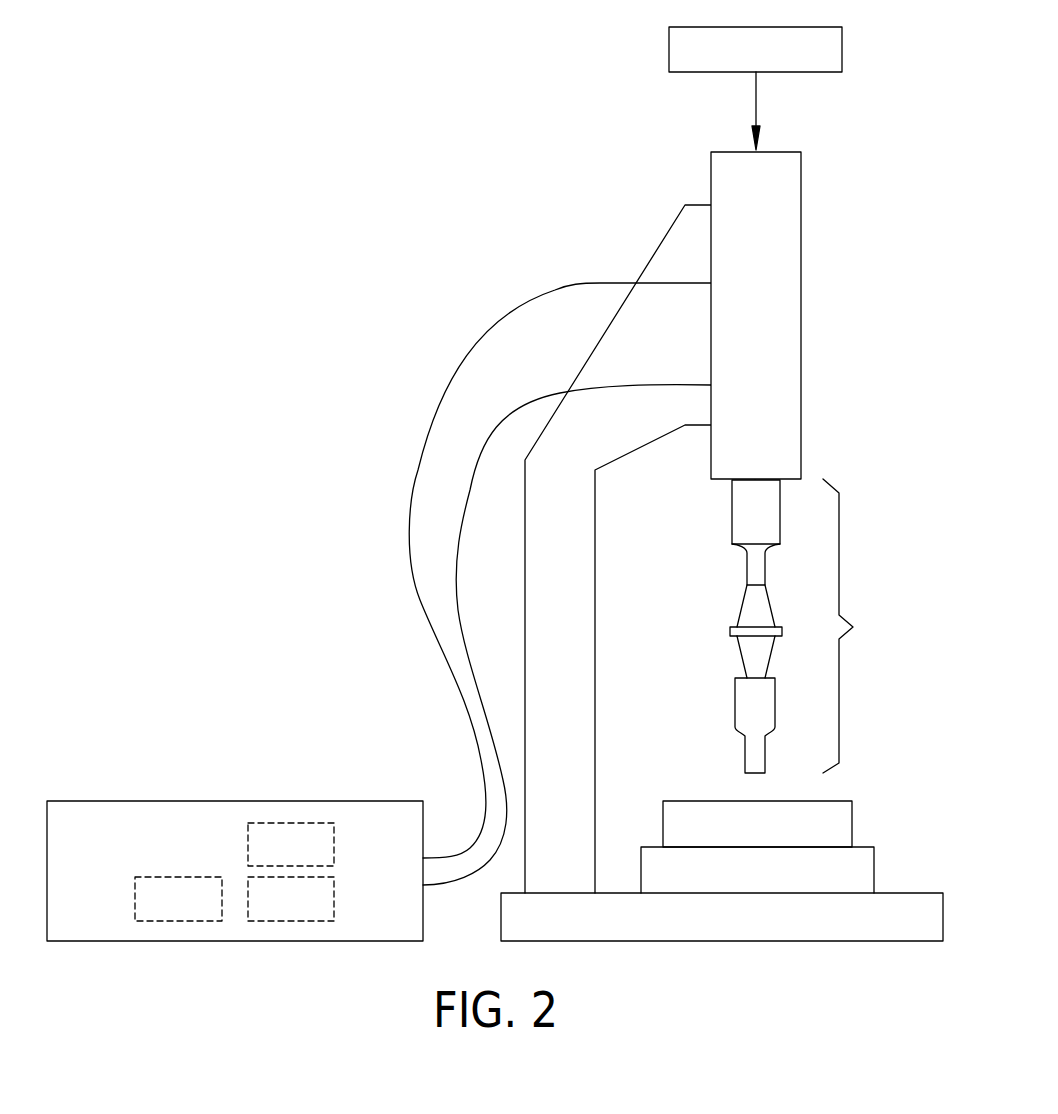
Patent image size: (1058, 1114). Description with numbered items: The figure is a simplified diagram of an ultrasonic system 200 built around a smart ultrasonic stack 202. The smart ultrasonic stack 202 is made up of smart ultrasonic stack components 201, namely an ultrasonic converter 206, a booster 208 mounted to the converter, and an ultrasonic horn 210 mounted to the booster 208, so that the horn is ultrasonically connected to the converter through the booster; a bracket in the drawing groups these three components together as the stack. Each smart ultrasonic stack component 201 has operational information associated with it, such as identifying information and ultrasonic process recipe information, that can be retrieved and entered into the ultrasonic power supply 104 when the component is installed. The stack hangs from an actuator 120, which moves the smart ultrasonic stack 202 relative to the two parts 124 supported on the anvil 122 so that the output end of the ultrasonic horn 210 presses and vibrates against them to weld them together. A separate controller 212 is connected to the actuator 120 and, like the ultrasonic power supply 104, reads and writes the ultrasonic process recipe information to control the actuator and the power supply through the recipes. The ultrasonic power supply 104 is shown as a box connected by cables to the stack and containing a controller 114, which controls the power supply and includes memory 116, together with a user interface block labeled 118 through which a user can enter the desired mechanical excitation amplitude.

The ultrasonic system 200 is at (368, 287).
The smart ultrasonic stack component 201 is at (863, 458).
The smart ultrasonic stack 202 is at (859, 626).
The ultrasonic converter 206 is at (732, 511).
The booster 208 is at (741, 605).
The ultrasonic horn 210 is at (735, 700).
The controller 212 is at (669, 48).
The actuator 120 is at (801, 315).
The anvil 122 is at (720, 942).
The parts 124 is at (852, 823).
The ultrasonic power supply 104 is at (177, 801).
The controller 114 is at (291, 823).
The memory 116 is at (291, 921).
The user interface 118 is at (178, 921).